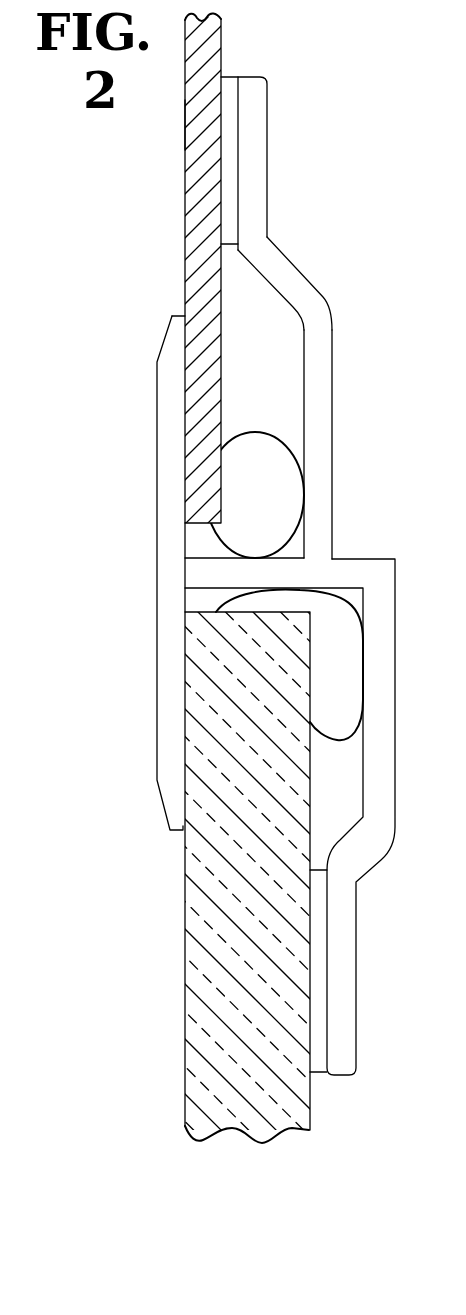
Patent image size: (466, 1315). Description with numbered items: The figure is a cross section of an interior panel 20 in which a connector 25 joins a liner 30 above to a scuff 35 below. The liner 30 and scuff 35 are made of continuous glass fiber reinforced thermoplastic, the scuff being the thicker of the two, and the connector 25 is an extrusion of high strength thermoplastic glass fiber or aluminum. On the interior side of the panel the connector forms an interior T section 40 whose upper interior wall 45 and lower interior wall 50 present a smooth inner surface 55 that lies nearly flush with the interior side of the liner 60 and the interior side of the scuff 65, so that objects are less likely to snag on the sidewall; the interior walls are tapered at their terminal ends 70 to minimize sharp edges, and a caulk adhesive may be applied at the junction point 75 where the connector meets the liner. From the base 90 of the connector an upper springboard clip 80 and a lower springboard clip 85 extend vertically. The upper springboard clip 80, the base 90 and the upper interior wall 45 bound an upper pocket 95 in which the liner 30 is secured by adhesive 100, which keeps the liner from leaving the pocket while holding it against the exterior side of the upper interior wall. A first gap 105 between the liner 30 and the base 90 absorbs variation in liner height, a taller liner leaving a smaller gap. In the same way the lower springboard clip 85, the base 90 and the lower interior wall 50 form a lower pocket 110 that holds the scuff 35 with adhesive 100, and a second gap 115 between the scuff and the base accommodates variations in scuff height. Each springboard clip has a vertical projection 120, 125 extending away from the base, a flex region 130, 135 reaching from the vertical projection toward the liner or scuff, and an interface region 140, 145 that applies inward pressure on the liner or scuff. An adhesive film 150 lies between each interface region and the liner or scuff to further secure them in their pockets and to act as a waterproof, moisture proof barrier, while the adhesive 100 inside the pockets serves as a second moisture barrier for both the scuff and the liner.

The interior panel 20 is at (112, 189).
The connector 25 is at (373, 572).
The liner 30 is at (210, 50).
The scuff 35 is at (195, 1118).
The interior T section 40 is at (168, 573).
The upper interior wall 45 is at (170, 408).
The lower interior wall 50 is at (168, 693).
The smooth inner surface 55 is at (168, 591).
The interior side of the liner 60 is at (185, 122).
The interior side of the scuff 65 is at (185, 962).
The terminal ends 70 is at (173, 347).
The junction point 75 is at (183, 317).
The upper springboard clip 80 is at (318, 435).
The lower springboard clip 85 is at (380, 716).
The base 90 is at (333, 573).
The upper pocket 95 is at (271, 381).
The adhesive 100 is at (278, 489).
The first gap 105 is at (200, 540).
The lower pocket 110 is at (358, 792).
The second gap 115 is at (203, 595).
The vertical projection 120 is at (317, 360).
The vertical projection 125 is at (380, 762).
The flex region 130 is at (298, 292).
The flex region 135 is at (360, 853).
The interface region 140 is at (255, 172).
The interface region 145 is at (343, 963).
The adhesive film 150 is at (230, 145).